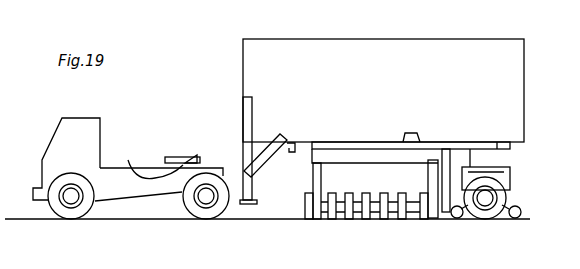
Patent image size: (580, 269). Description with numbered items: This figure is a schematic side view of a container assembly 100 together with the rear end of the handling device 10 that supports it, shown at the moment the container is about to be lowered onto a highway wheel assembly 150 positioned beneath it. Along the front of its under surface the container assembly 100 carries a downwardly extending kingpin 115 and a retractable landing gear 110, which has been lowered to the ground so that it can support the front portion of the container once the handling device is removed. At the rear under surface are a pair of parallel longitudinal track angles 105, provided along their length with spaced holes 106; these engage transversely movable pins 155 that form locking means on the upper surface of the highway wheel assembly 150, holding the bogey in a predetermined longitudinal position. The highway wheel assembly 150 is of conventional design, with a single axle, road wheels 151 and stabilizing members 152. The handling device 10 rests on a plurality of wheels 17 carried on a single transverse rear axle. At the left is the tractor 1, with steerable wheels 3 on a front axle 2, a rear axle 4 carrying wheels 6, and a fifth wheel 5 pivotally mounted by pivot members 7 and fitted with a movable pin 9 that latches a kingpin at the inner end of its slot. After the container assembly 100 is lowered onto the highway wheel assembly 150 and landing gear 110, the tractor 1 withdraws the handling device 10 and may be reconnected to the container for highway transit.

The tractor 1 is at (56, 132).
The axle 2 is at (70, 198).
The steerable wheels 3 is at (80, 214).
The rear axle 4 is at (207, 197).
The fifth wheel 5 is at (170, 157).
The wheels 6 is at (186, 202).
The pivot members 7 is at (129, 160).
The movable pin 9 is at (200, 156).
The handling device 10 is at (312, 170).
The wheels 17 is at (389, 195).
The container assembly 100 is at (377, 38).
The track angles 105 is at (497, 141).
The holes 106 is at (416, 133).
The retractable landing gear 110 is at (246, 170).
The kingpin 115 is at (293, 151).
The highway wheel assembly 150 is at (482, 136).
The road wheels 151 is at (487, 219).
The stabilizing members 152 is at (515, 219).
The pins 155 is at (506, 168).